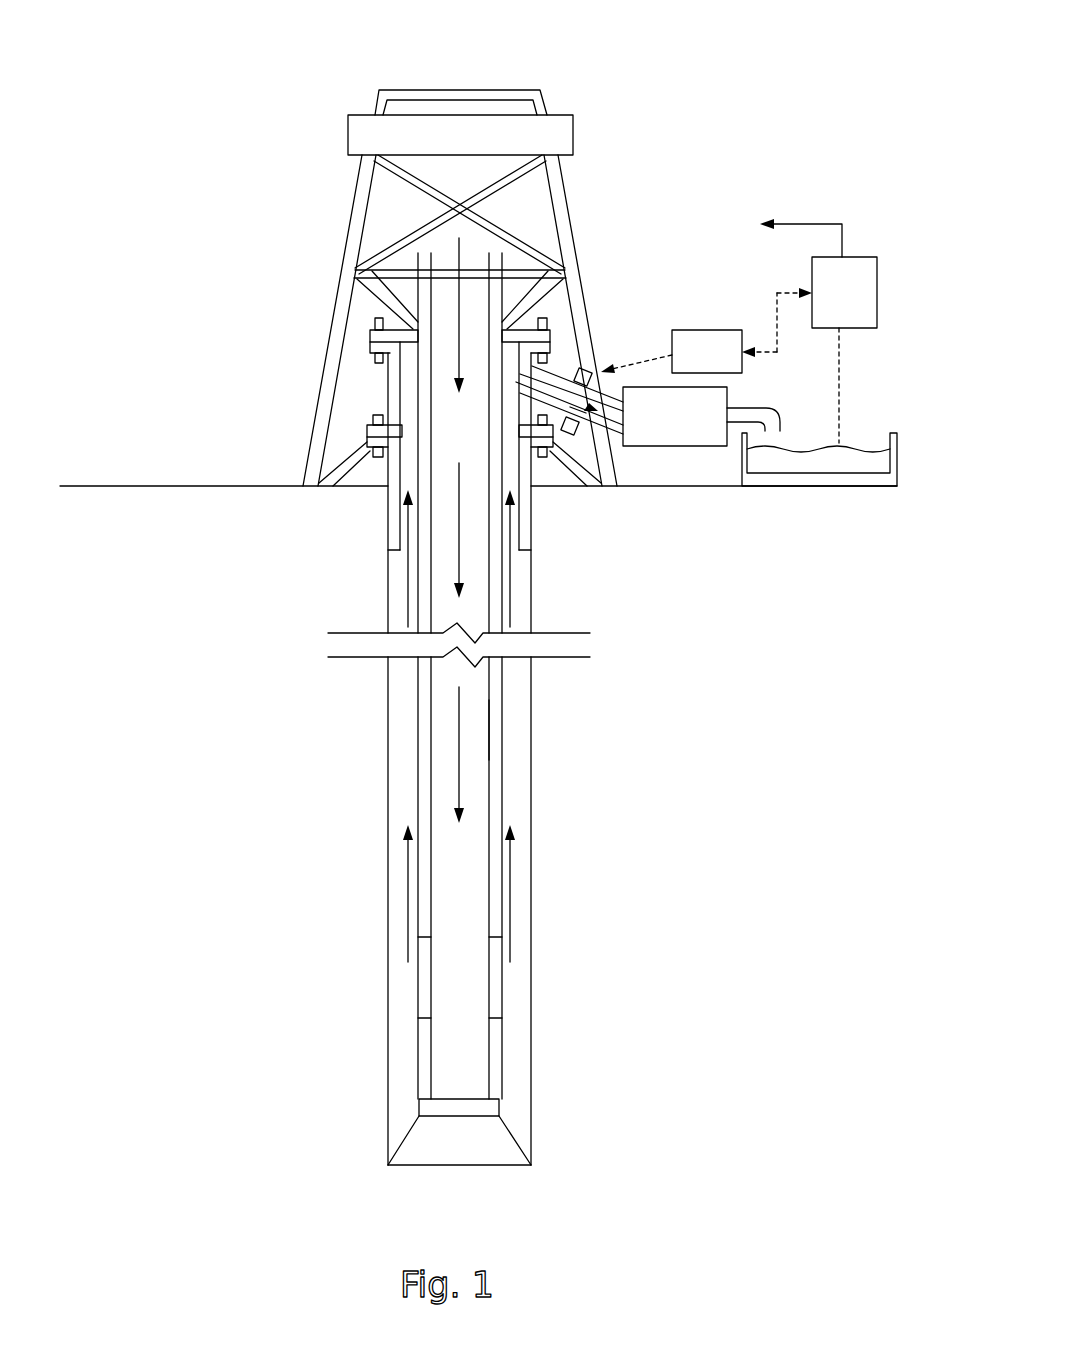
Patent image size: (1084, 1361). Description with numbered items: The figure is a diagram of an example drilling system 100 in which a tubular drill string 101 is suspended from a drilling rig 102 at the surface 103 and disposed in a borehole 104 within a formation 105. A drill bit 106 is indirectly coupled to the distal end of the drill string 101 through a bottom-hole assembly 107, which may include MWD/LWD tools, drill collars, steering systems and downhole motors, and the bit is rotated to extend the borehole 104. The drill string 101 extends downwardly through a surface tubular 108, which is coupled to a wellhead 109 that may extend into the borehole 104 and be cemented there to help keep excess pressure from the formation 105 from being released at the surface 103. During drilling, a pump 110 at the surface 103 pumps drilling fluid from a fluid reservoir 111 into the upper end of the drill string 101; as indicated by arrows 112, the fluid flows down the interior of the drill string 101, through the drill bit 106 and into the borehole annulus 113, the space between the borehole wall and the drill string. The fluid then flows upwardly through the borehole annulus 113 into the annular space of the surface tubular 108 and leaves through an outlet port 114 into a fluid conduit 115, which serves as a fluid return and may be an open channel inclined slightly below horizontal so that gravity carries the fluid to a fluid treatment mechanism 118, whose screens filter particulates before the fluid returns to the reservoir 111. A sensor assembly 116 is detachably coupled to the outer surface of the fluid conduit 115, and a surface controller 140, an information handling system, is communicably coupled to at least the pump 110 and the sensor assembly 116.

The drilling system 100 is at (754, 66).
The drill string 101 is at (502, 753).
The drilling rig 102 is at (557, 168).
The surface 103 is at (223, 486).
The borehole 104 is at (533, 596).
The formation 105 is at (795, 640).
The drill bit 106 is at (520, 1143).
The bottom-hole assembly 107 is at (502, 979).
The surface tubular 108 is at (388, 380).
The wellhead 109 is at (388, 470).
The pump 110 is at (818, 331).
The fluid reservoir 111 is at (898, 440).
The arrows 112 is at (457, 762).
The borehole annulus 113 is at (523, 1036).
The outlet port 114 is at (546, 357).
The fluid conduit 115 is at (615, 395).
The sensor assembly 116 is at (601, 365).
The fluid treatment mechanism 118 is at (648, 406).
The surface controller 140 is at (706, 330).